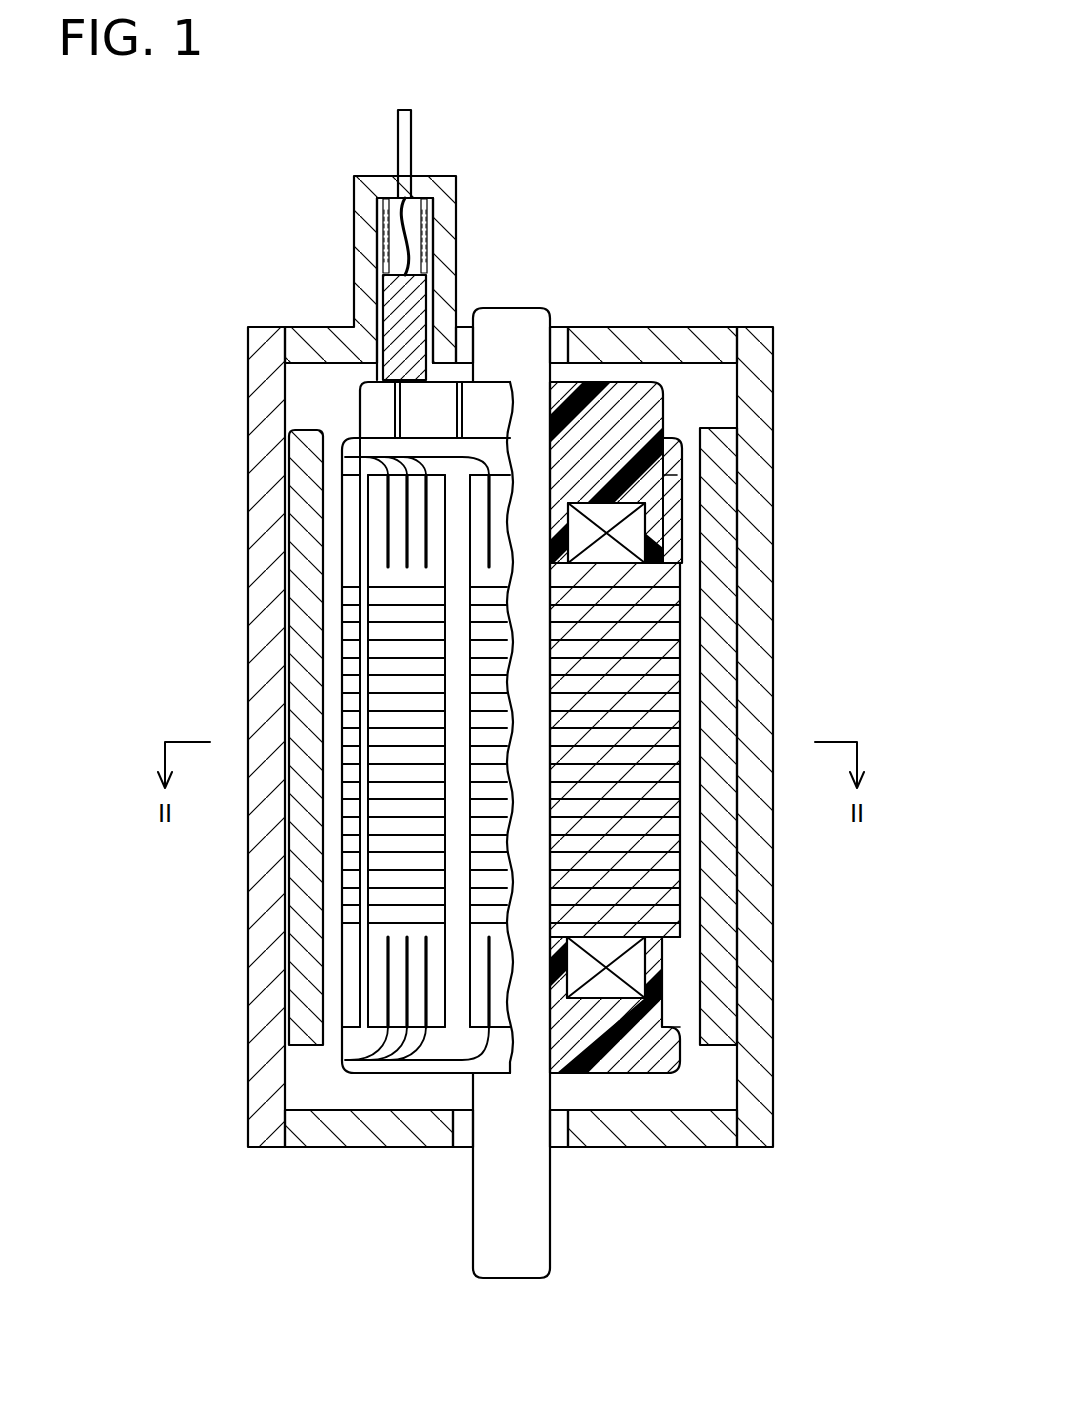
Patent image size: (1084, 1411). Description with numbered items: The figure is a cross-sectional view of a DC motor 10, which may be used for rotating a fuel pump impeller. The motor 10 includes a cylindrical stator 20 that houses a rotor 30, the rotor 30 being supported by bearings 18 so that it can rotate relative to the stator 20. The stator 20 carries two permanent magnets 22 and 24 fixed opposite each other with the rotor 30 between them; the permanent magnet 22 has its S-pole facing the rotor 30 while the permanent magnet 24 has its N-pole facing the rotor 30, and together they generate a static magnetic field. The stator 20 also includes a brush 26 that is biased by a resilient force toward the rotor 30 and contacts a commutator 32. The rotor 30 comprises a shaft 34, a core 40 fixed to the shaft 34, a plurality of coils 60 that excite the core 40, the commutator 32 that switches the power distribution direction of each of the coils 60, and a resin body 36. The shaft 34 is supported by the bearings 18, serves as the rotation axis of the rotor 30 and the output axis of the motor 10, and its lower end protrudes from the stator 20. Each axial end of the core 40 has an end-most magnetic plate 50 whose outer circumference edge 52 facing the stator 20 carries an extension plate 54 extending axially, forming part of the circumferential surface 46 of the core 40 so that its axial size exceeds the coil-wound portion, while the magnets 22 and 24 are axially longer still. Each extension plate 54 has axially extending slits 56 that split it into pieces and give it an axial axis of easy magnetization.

The motor 10 is at (866, 170).
The bearings 18 is at (560, 343).
The stator 20 is at (270, 420).
The permanent magnet 22 is at (302, 675).
The permanent magnet 24 is at (713, 673).
The brush 26 is at (397, 331).
The rotor 30 is at (345, 398).
The commutator 32 is at (373, 418).
The shaft 34 is at (508, 326).
The resin body 36 is at (618, 395).
The core 40 is at (642, 717).
The circumferential surface 46 is at (682, 845).
The end-most magnetic plate 50 is at (675, 628).
The outer circumference edge 52 is at (673, 573).
The extension plate 54 is at (485, 578).
The slit 56 is at (487, 457).
The coils 60 is at (612, 513).